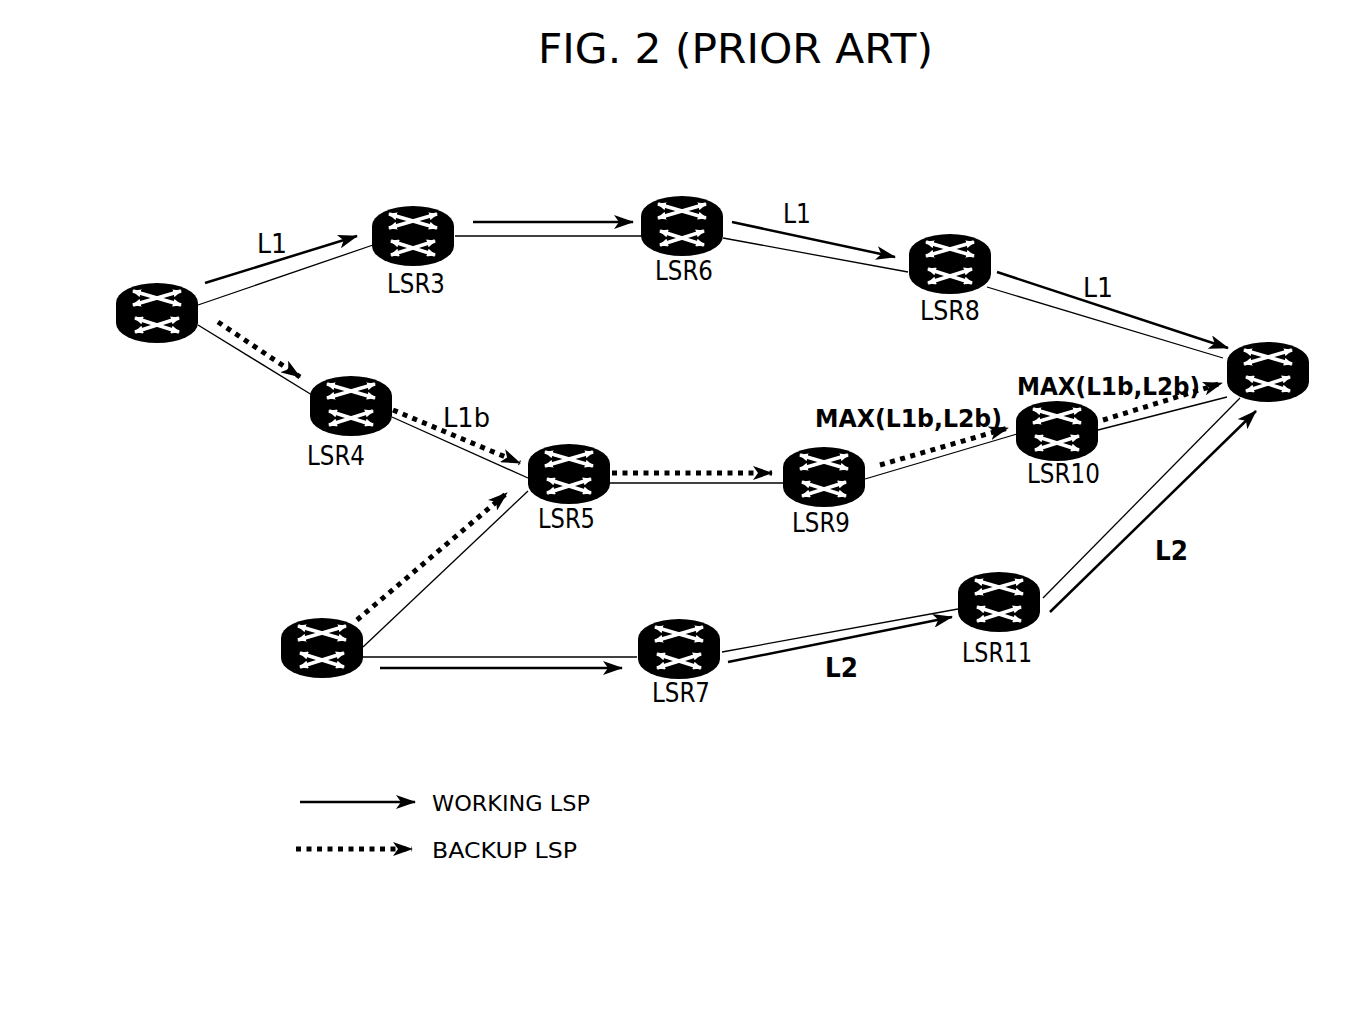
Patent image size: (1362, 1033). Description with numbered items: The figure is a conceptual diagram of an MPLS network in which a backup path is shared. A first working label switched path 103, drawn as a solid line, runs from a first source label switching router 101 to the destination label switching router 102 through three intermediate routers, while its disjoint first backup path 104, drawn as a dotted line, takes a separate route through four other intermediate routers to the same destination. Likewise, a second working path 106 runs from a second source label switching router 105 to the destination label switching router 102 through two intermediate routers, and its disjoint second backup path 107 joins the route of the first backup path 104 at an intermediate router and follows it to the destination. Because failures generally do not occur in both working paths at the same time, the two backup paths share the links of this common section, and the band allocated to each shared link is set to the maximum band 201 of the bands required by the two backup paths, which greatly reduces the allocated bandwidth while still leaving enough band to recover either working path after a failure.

The source LSR1 101 is at (156, 283).
The destination LSR12 102 is at (1263, 342).
The working path LSP L1 103 is at (495, 220).
The backup path LSP L1b 104 is at (288, 366).
The source LSR2 105 is at (280, 646).
The working path LSP L2 106 is at (442, 672).
The backup path LSP L2b 107 is at (432, 556).
The maximum band MAX(L1b, L2b) 201 is at (661, 420).